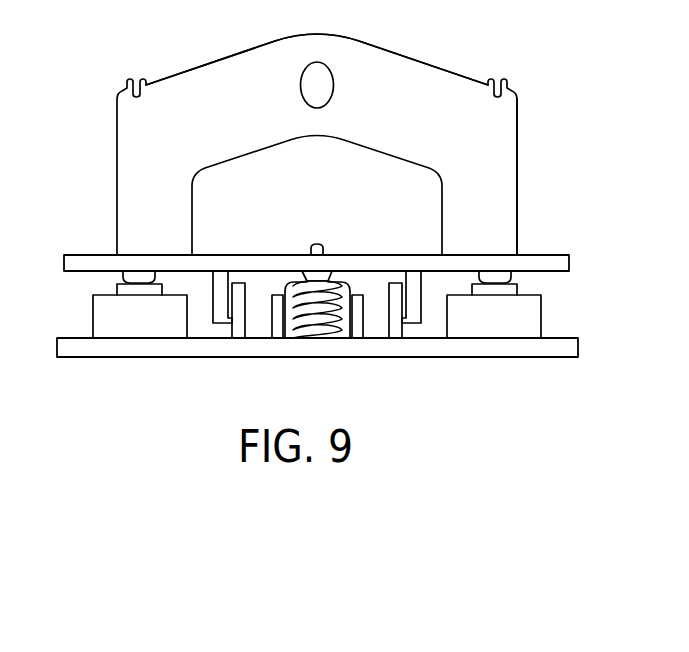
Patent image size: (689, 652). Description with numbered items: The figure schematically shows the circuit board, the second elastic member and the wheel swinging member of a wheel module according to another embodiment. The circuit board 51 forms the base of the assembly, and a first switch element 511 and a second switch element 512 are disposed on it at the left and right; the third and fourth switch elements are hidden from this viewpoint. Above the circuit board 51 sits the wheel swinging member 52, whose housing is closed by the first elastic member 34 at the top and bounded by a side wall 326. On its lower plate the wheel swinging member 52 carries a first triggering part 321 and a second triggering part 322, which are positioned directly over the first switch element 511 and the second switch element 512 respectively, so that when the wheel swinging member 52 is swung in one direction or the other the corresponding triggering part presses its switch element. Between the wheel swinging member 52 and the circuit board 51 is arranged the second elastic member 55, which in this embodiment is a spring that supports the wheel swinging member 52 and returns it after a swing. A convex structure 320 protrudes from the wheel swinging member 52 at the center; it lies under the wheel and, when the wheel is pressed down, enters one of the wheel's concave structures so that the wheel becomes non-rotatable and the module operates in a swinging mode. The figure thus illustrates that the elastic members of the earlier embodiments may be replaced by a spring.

The first elastic member 34 is at (182, 97).
The wheel swinging member 52 is at (104, 169).
The side wall of wheel swinging member 326 is at (507, 195).
The first triggering part 321 is at (140, 275).
The second triggering part 322 is at (493, 275).
The first switch element 511 is at (103, 327).
The second switch element 512 is at (530, 326).
The circuit board 51 is at (121, 347).
The convex structure 320 is at (305, 256).
The second elastic member 55 is at (340, 318).